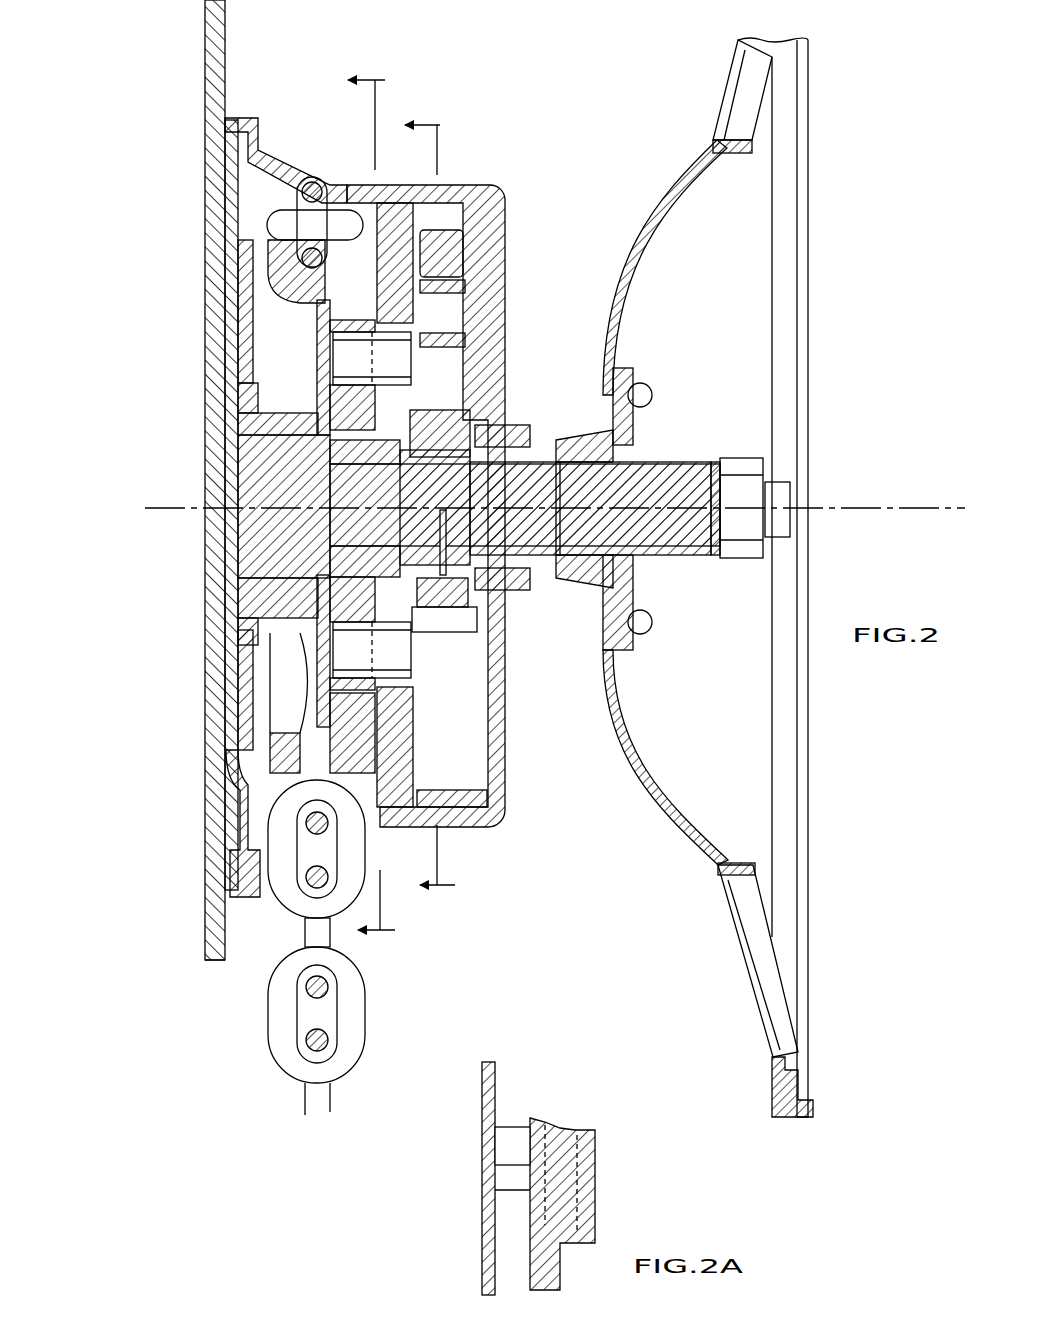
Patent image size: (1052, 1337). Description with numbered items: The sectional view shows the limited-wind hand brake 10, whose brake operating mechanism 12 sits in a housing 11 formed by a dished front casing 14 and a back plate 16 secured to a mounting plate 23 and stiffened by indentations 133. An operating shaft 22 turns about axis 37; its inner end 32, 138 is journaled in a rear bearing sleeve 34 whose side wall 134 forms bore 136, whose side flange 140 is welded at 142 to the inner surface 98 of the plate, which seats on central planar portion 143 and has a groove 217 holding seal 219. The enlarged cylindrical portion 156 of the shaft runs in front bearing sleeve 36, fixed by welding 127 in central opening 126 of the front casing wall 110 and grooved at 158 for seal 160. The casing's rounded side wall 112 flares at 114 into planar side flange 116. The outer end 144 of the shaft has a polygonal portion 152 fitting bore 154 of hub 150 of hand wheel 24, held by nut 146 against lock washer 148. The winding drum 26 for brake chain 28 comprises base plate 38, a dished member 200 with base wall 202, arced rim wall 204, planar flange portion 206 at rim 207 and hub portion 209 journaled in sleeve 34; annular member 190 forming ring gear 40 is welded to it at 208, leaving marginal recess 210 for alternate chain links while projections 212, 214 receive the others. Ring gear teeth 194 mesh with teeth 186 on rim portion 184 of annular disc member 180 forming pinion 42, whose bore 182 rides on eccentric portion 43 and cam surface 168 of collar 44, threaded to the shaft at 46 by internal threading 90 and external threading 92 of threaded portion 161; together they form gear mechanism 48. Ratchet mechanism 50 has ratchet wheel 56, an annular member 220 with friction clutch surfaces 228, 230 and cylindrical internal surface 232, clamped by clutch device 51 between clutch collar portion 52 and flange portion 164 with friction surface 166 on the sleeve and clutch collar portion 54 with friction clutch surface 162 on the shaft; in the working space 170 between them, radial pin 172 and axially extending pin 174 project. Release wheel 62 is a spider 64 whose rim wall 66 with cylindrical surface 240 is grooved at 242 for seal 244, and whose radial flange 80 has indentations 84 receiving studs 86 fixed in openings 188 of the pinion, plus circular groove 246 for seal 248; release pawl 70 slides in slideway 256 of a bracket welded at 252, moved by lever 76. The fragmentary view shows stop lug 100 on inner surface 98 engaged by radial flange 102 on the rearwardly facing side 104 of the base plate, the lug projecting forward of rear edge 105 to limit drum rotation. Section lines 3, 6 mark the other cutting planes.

In FIG. 2, the hand brake 10 is at (607, 100).
In FIG. 2, the housing 11 is at (501, 188).
In FIG. 2, the brake operating mechanism 12 is at (250, 671).
In FIG. 2, the front casing 14 is at (533, 245).
In FIG. 2, the back plate 16 is at (218, 270).
In FIG. 2A, the back plate 16 is at (481, 1072).
In FIG. 2, the operating shaft 22 is at (681, 468).
In FIG. 2, the mounting plate 23 is at (212, 955).
In FIG. 2, the hand wheel 24 is at (786, 270).
In FIG. 2, the winding drum 26 is at (300, 775).
In FIG. 2, the brake chain 28 is at (290, 1005).
In FIG. 2, the inner end 32 is at (247, 530).
In FIG. 2, the rear bearing sleeve 34 is at (236, 447).
In FIG. 2, the front bearing sleeve 36 is at (563, 470).
In FIG. 2, the axis of rotation 37 is at (950, 483).
In FIG. 2, the drum base plate 38 is at (257, 365).
In FIG. 2A, the drum base plate 38 is at (580, 1160).
In FIG. 2, the ring gear 40 is at (462, 185).
In FIG. 2, the pinion 42 is at (257, 407).
In FIG. 2, the eccentric portion 43 is at (331, 480).
In FIG. 2, the collar 44 is at (247, 515).
In FIG. 2, the threaded connection 46 is at (438, 530).
In FIG. 2, the gear mechanism 48 is at (346, 275).
In FIG. 2, the ratchet mechanism 50 is at (506, 622).
In FIG. 2, the clutch device 51 is at (326, 650).
In FIG. 2, the clutch collar portion 52 is at (471, 470).
In FIG. 2, the clutch collar portion 54 is at (531, 475).
In FIG. 2, the ratchet wheel 56 is at (506, 425).
In FIG. 2, the release wheel 62 is at (503, 825).
In FIG. 2, the spider 64 is at (481, 830).
In FIG. 2, the rim wall 66 is at (503, 800).
In FIG. 2, the release pawl 70 is at (447, 232).
In FIG. 2, the actuating lever 76 is at (505, 282).
In FIG. 2, the radial flange 80 is at (410, 420).
In FIG. 2, the indentations 84 is at (446, 292).
In FIG. 2, the studs 86 is at (365, 361).
In FIG. 2, the internal threading 90 is at (373, 480).
In FIG. 2, the external threading 92 is at (390, 592).
In FIG. 2, the inner surface 98 is at (232, 520).
In FIG. 2A, the stop lug 100 is at (514, 1145).
In FIG. 2A, the radial flange 102 is at (540, 1212).
In FIG. 2, the rearwardly facing side 104 is at (247, 290).
In FIG. 2A, the rearwardly facing side 104 is at (530, 1265).
In FIG. 2A, the rear edge 105 is at (530, 1190).
In FIG. 2, the front casing wall 110 is at (505, 300).
In FIG. 2, the rounded side wall 112 is at (447, 200).
In FIG. 2, the flared portion 114 is at (337, 165).
In FIG. 2, the planar side flange 116 is at (262, 150).
In FIG. 2, the central opening 126 is at (541, 595).
In FIG. 2, the welding 127 is at (506, 430).
In FIG. 2, the indentations 133 is at (222, 214).
In FIG. 2, the circumambient side wall 134 is at (247, 645).
In FIG. 2, the bore 136 is at (252, 625).
In FIG. 2, the inner end 138 is at (242, 560).
In FIG. 2, the side flange 140 is at (247, 602).
In FIG. 2, the welding 142 is at (255, 375).
In FIG. 2, the central planar portion 143 is at (252, 430).
In FIG. 2, the outer end 144 is at (781, 500).
In FIG. 2, the securing nut 146 is at (746, 492).
In FIG. 2, the lock washer 148 is at (741, 480).
In FIG. 2, the hub 150 is at (651, 420).
In FIG. 2, the polygonal portion 152 is at (641, 452).
In FIG. 2, the bore 154 is at (656, 560).
In FIG. 2, the enlarged cylindrical portion 156 is at (546, 580).
In FIG. 2, the groove 158 is at (528, 440).
In FIG. 2, the seal 160 is at (549, 448).
In FIG. 2, the threaded portion 161 is at (361, 512).
In FIG. 2, the friction clutch surface 162 is at (521, 405).
In FIG. 2, the flange portion 164 is at (442, 313).
In FIG. 2, the friction surface 166 is at (421, 700).
In FIG. 2, the cylindrical cam surface 168 is at (340, 350).
In FIG. 2, the annular working space 170 is at (446, 475).
In FIG. 2, the radial pin 172 is at (516, 475).
In FIG. 2, the axially extending pin 174 is at (505, 670).
In FIG. 2, the annular disc member 180 is at (340, 400).
In FIG. 2, the bore 182 is at (296, 623).
In FIG. 2, the rim portion 184 is at (330, 690).
In FIG. 2, the pinion teeth 186 is at (272, 330).
In FIG. 2, the openings 188 is at (262, 345).
In FIG. 2, the annular member 190 is at (505, 705).
In FIG. 2, the gear teeth 194 is at (300, 720).
In FIG. 2, the dished member 200 is at (275, 760).
In FIG. 2A, the dished member 200 is at (572, 1210).
In FIG. 2, the planar base wall 202 is at (257, 690).
In FIG. 2, the arced rim wall 204 is at (258, 832).
In FIG. 2, the planar flange portion 206 is at (232, 228).
In FIG. 2, the rim 207 is at (298, 278).
In FIG. 2, the welding 208 is at (248, 172).
In FIG. 2, the hub portion 209 is at (242, 455).
In FIG. 2, the marginal recess 210 is at (290, 740).
In FIG. 2, the radial projection 212 is at (366, 285).
In FIG. 2, the radial projection 214 is at (286, 212).
In FIG. 2, the groove 217 is at (242, 478).
In FIG. 2, the seal 219 is at (301, 562).
In FIG. 2, the annular member 220 is at (531, 555).
In FIG. 2, the friction clutch surface 228 is at (541, 620).
In FIG. 2, the friction clutch surface 230 is at (481, 400).
In FIG. 2, the cylindrical internal surface 232 is at (496, 548).
In FIG. 2, the cylindrical surface 240 is at (471, 830).
In FIG. 2, the groove 242 is at (452, 786).
In FIG. 2, the seal 244 is at (416, 828).
In FIG. 2, the circular groove 246 is at (505, 770).
In FIG. 2, the seal 248 is at (505, 212).
In FIG. 2, the welding 252 is at (522, 200).
In FIG. 2, the rectilinear slideway 256 is at (505, 320).
In FIG. 2, the section line 3 is at (439, 505).
In FIG. 2, the section line 6 is at (381, 506).